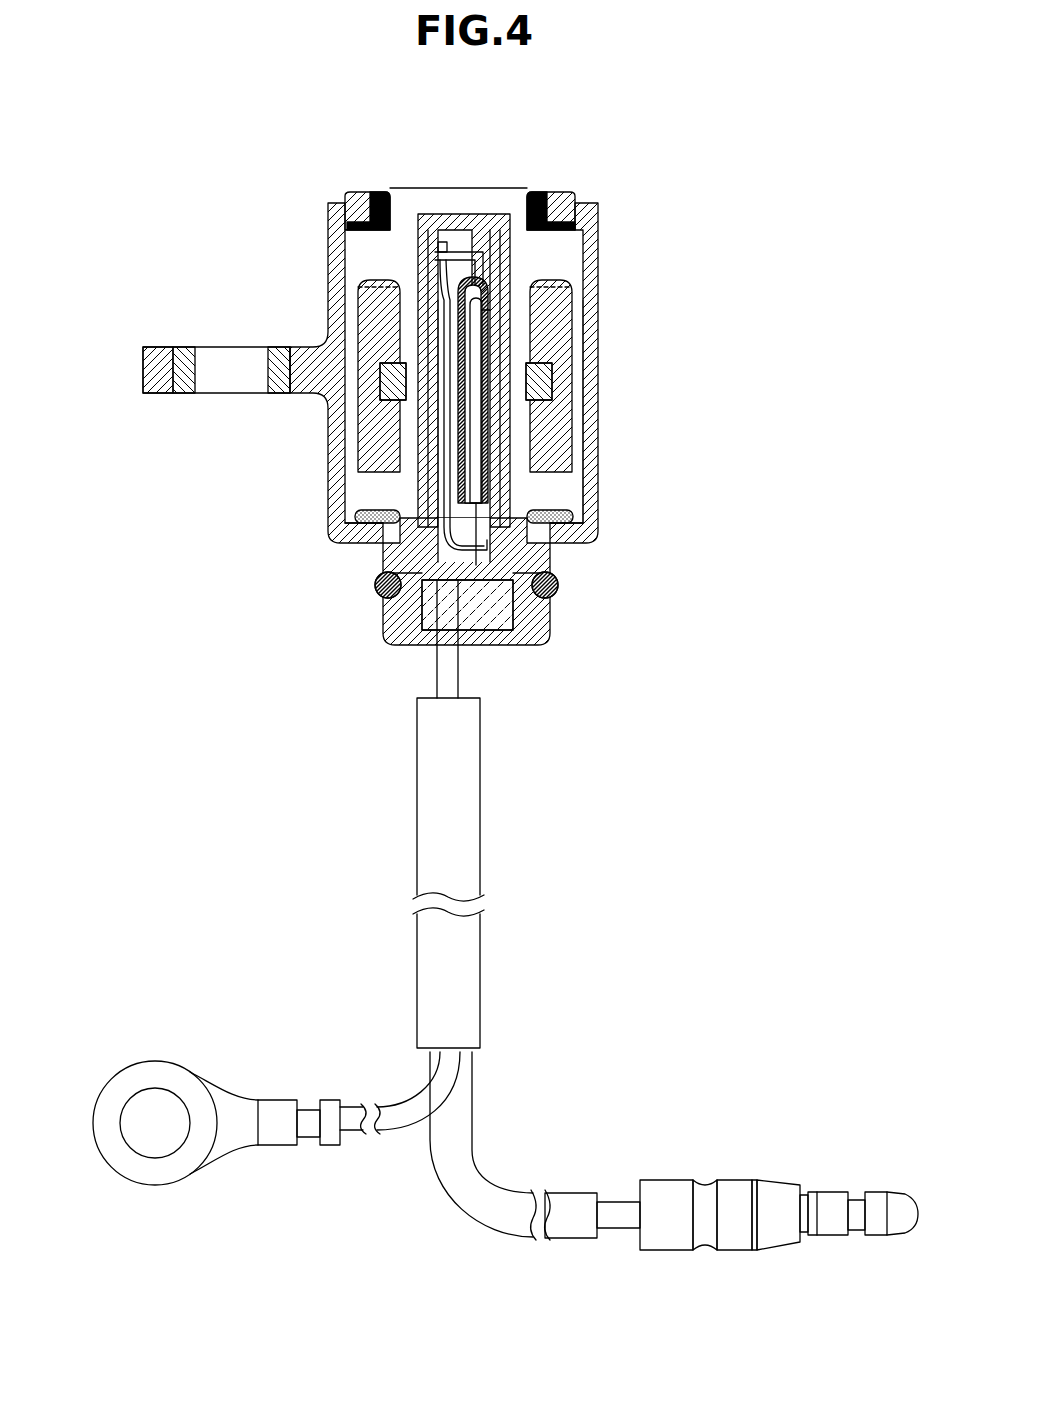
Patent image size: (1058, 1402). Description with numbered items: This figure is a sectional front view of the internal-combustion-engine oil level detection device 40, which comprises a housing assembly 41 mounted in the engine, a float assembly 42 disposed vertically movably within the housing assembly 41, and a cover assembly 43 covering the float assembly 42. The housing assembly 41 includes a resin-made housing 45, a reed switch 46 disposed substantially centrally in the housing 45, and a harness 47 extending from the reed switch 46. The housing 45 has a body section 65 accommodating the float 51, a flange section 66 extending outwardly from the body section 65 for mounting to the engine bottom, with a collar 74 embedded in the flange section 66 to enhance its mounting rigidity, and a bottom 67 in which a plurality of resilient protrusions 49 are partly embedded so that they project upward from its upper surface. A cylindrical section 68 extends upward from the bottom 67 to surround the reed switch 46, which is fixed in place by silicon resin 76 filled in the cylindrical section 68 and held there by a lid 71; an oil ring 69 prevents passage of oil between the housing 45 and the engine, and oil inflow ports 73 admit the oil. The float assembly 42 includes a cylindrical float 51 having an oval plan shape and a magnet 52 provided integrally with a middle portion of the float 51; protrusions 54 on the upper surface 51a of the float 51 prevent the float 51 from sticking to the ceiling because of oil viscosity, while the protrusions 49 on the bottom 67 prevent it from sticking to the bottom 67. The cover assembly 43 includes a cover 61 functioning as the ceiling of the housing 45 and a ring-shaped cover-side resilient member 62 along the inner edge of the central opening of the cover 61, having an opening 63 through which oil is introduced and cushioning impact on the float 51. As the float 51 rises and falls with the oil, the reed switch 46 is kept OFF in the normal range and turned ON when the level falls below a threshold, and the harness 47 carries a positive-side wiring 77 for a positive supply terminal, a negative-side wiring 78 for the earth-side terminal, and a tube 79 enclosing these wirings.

The oil level detection device 40 is at (489, 668).
The housing assembly 41 is at (441, 392).
The float assembly 42 is at (510, 373).
The cover assembly 43 is at (510, 158).
The housing 45 is at (605, 355).
The reed switch 46 is at (480, 417).
The harness 47 is at (505, 974).
The protrusions 49 is at (357, 505).
The float 51 is at (579, 421).
The upper surface 51a is at (434, 242).
The magnet 52 is at (383, 340).
The protrusions 54 is at (378, 280).
The cover 61 is at (353, 193).
The cover-side resilient member 62 is at (527, 193).
The opening 63 is at (407, 285).
The body section 65 is at (586, 424).
The flange section 66 is at (163, 348).
The bottom 67 is at (350, 477).
The cylindrical section 68 is at (440, 216).
The oil ring 69 is at (565, 590).
The lid 71 is at (535, 640).
The oil inflow ports 73 is at (363, 533).
The collar 74 is at (190, 350).
The silicon resin 76 is at (480, 240).
The positive-side wiring 77 is at (507, 1183).
The negative-side wiring 78 is at (407, 1102).
The protective sleeve 79 is at (470, 855).